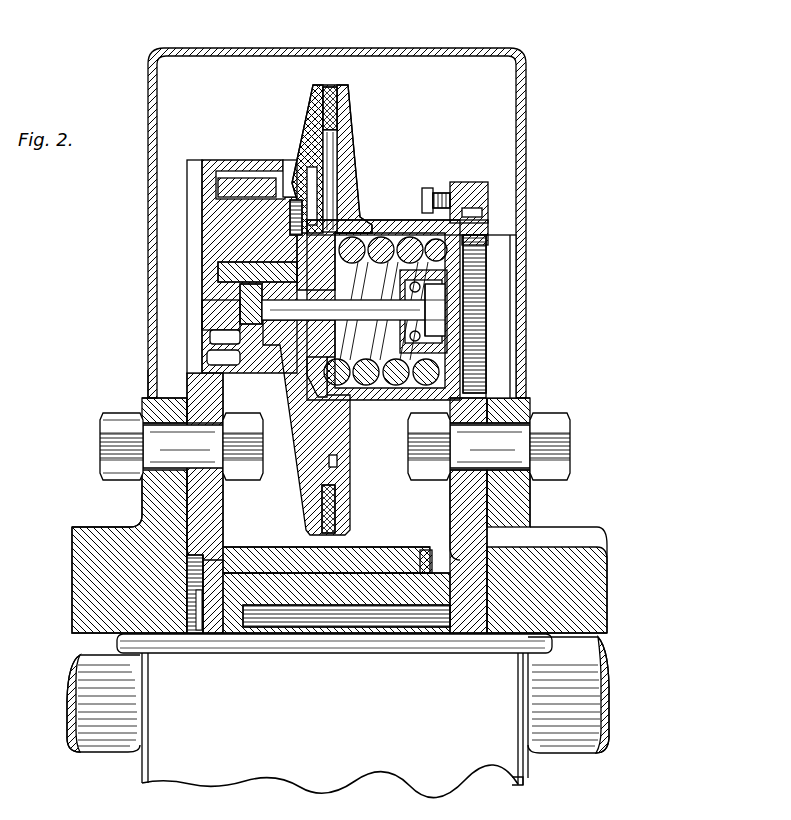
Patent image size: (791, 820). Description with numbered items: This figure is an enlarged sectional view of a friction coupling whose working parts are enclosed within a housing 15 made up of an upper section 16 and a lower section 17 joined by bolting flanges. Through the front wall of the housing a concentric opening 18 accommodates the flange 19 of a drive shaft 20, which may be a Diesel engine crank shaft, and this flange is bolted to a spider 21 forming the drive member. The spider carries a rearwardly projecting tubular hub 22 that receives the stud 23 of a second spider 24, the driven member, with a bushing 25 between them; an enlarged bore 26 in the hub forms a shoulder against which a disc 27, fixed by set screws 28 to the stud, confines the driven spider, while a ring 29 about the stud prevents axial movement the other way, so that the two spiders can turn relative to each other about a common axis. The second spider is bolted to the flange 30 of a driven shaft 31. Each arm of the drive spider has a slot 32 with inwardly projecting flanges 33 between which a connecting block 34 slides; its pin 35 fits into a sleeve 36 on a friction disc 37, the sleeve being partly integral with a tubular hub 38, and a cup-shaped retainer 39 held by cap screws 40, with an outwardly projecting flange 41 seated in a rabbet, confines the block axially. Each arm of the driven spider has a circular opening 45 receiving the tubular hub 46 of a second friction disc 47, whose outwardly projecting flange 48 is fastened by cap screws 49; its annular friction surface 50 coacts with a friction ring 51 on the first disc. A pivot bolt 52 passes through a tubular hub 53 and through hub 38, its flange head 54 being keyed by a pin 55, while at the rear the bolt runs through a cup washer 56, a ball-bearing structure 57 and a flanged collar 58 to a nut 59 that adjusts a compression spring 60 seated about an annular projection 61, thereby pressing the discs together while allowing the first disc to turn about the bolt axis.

The housing 15 is at (532, 150).
The upper section 16 is at (432, 48).
The lower section 17 is at (500, 772).
The concentric opening 18 is at (150, 384).
The flange 19 is at (144, 397).
The shaft 20 is at (88, 527).
The spider 21 is at (212, 497).
The tubular hub 22 is at (265, 550).
The stud 23 is at (343, 612).
The second spider 24 is at (478, 507).
The bushing 25 is at (360, 552).
The bore 26 is at (191, 610).
The disc 27 is at (205, 628).
The set screws 28 is at (199, 612).
The ring 29 is at (423, 550).
The flange 30 is at (525, 405).
The driven shaft 31 is at (600, 567).
The slot 32 is at (190, 245).
The inwardly projecting flanges 33 is at (283, 165).
The connecting block 34 is at (196, 185).
The pin 35 is at (232, 222).
The sleeve 36 is at (232, 180).
The friction disc 37 is at (312, 100).
The tubular hub 38 is at (230, 272).
The cup-shaped retainer 39 is at (303, 185).
The cap screws 40 is at (303, 215).
The outwardly projecting flange 41 is at (352, 180).
The circular opening 45 is at (488, 345).
The tubular hub 46 is at (398, 225).
The second friction disc 47 is at (362, 130).
The outwardly projecting flange 48 is at (437, 187).
The cap screws 49 is at (474, 185).
The annular friction surface 50 is at (342, 468).
The ring 51 is at (332, 87).
The pivot bolt 52 is at (212, 300).
The tubular hub 53 is at (225, 337).
The flange head 54 is at (210, 312).
The pin 55 is at (228, 362).
The cup washer 56 is at (476, 258).
The ball-bearing structure 57 is at (440, 290).
The collar 58 is at (438, 307).
The nut 59 is at (438, 327).
The compression spring 60 is at (394, 396).
The annular projection 61 is at (355, 235).